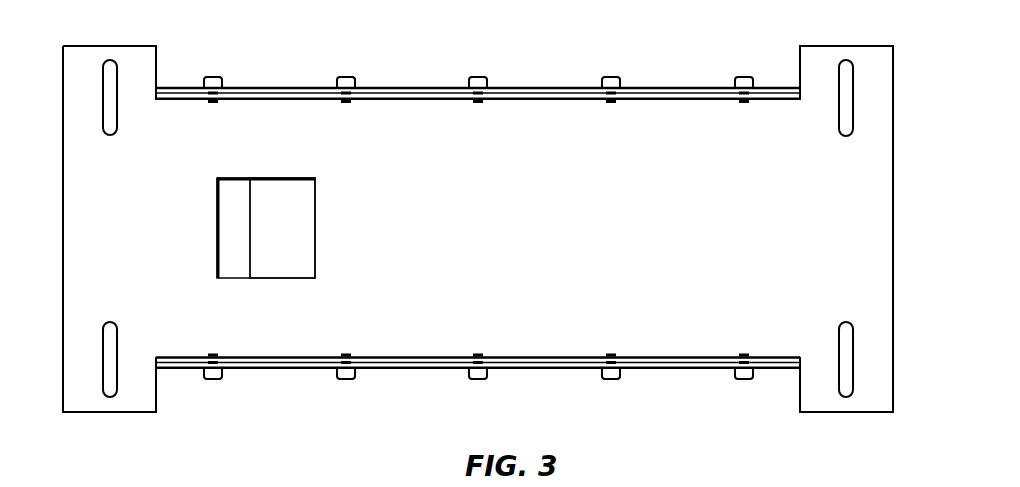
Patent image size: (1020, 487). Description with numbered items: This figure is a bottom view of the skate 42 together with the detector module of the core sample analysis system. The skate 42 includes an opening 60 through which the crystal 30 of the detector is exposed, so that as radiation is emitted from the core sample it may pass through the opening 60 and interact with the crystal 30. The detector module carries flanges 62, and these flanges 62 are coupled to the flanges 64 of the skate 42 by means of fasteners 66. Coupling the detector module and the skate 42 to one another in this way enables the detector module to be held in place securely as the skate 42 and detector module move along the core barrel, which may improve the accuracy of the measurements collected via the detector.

The skate 42 is at (893, 223).
The flanges of the detector module 62 is at (507, 86).
The flanges of the skate 64 is at (533, 100).
The fasteners 66 is at (615, 77).
The crystal 30 is at (280, 198).
The opening 60 is at (315, 228).